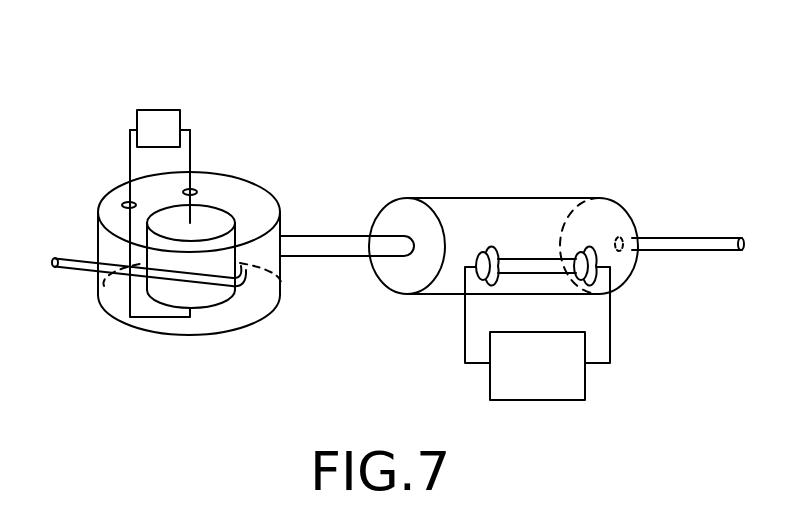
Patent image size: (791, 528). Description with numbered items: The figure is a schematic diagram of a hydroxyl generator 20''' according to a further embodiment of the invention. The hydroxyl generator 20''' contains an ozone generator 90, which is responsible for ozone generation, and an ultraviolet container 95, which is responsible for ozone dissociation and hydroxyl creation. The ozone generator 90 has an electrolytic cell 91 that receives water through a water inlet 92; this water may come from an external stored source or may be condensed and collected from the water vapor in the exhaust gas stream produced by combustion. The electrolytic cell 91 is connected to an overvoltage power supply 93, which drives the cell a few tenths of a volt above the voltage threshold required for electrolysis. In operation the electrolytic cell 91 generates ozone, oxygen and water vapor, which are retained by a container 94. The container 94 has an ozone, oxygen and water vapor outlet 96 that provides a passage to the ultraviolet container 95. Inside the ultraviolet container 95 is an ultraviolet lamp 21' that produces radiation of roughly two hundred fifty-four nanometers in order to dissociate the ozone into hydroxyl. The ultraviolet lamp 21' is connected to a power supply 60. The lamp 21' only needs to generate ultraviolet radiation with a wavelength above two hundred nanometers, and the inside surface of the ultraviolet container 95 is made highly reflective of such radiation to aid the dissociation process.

The ozone generator 90 is at (107, 193).
The electrolytic cell 91 is at (240, 217).
The water inlet 92 is at (85, 262).
The overvoltage power supply 93 is at (157, 110).
The container 94 is at (167, 333).
The ultraviolet container 95 is at (445, 198).
The ozone, oxygen and water vapor outlet 96 is at (340, 257).
The ultraviolet lamp 21' is at (610, 224).
The power supply 60 is at (523, 332).
The hydroxyl generator 20''' is at (382, 173).